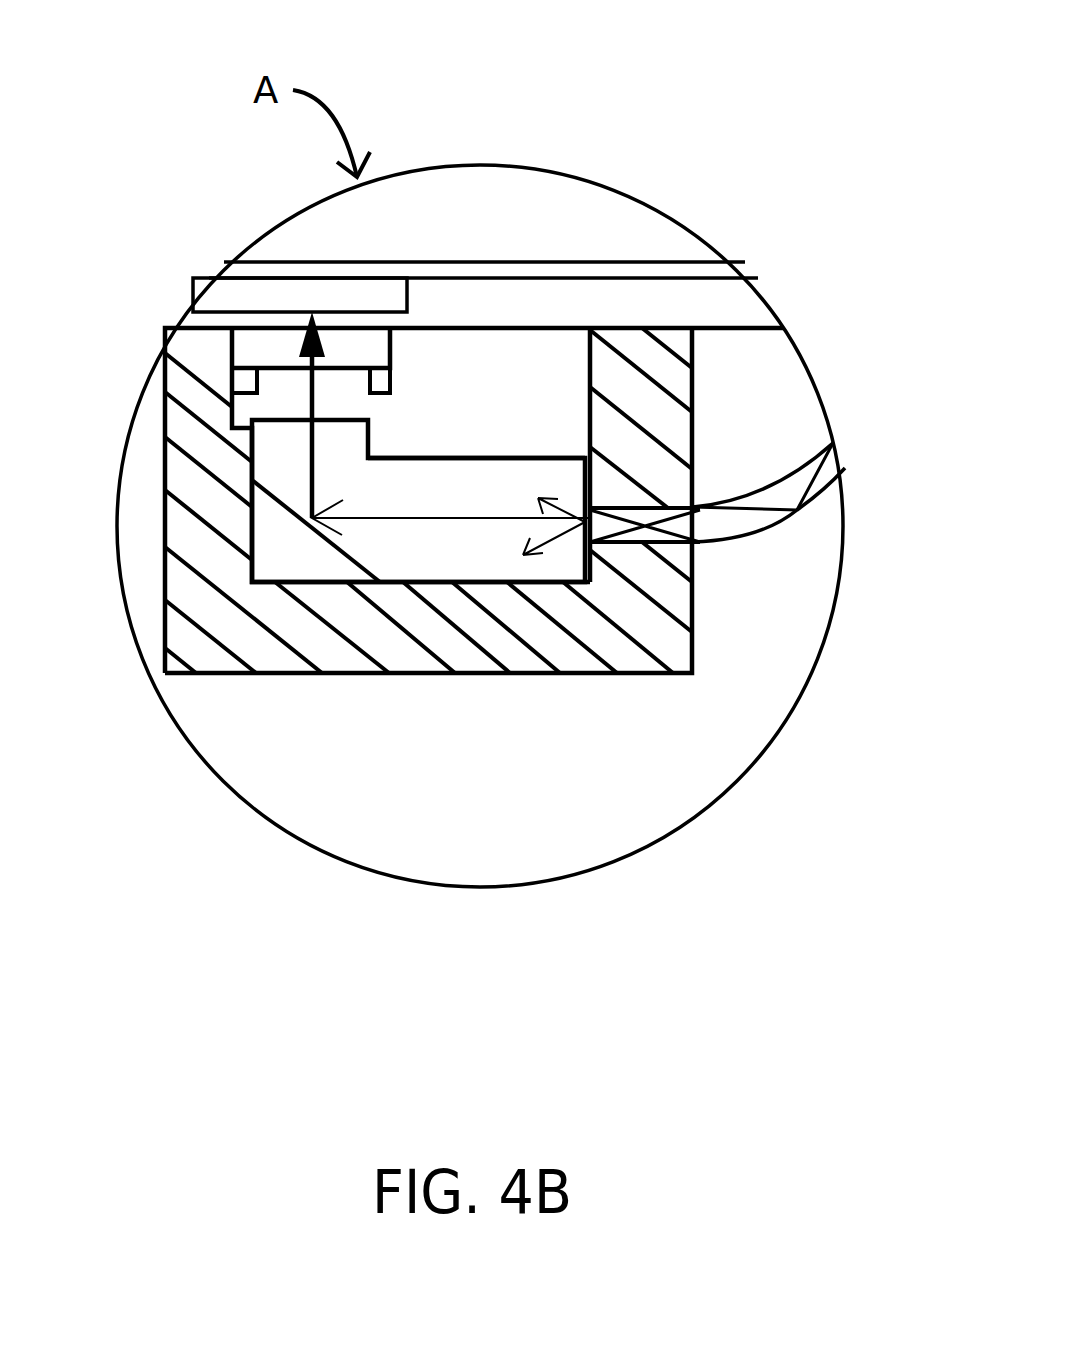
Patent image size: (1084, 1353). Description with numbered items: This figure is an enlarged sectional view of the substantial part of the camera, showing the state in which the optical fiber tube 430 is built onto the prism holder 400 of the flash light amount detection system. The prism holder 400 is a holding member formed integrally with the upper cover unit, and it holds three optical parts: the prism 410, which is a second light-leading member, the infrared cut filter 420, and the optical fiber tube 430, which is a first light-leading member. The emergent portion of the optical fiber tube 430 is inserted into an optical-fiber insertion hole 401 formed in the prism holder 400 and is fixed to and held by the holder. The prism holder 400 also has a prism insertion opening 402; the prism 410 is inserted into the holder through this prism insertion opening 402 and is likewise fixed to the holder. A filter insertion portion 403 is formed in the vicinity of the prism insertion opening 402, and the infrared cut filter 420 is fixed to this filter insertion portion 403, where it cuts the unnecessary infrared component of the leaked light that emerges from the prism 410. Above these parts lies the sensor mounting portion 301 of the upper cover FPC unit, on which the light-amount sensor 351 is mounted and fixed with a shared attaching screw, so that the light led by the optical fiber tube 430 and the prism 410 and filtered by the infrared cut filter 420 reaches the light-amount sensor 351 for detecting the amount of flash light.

The sensor mounting portion 301 is at (390, 262).
The light-amount sensor 351 is at (213, 295).
The prism holder 400 is at (403, 673).
The optical-fiber insertion hole 401 is at (660, 545).
The prism insertion opening 402 is at (473, 385).
The filter insertion portion 403 is at (230, 368).
The prism 410 is at (535, 458).
The infrared cut filter 420 is at (363, 352).
The optical fiber tube 430 is at (845, 470).